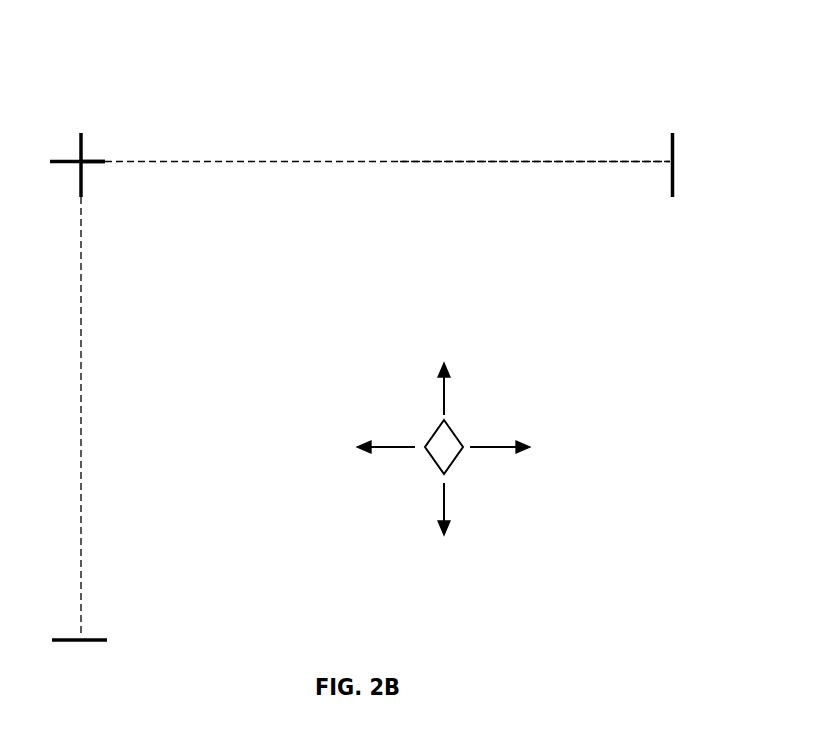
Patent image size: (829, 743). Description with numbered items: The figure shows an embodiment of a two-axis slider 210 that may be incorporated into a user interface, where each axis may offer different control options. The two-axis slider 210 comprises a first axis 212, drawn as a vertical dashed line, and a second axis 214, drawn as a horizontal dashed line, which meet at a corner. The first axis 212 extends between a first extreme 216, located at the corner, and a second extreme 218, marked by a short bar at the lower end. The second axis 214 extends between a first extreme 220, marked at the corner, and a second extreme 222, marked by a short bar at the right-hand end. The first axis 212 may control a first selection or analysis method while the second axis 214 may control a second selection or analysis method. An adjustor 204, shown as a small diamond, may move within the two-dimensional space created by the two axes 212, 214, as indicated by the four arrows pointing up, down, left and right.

The adjustor 204 is at (455, 437).
The two-axis slider 210 is at (398, 122).
The first axis 212 is at (81, 348).
The second axis 214 is at (530, 161).
The first extreme 216 is at (87, 163).
The second extreme 218 is at (107, 639).
The first extreme 220 is at (83, 137).
The second extreme 222 is at (674, 150).